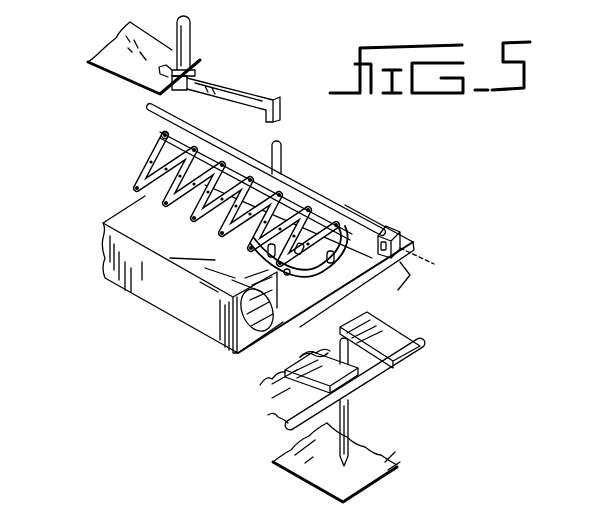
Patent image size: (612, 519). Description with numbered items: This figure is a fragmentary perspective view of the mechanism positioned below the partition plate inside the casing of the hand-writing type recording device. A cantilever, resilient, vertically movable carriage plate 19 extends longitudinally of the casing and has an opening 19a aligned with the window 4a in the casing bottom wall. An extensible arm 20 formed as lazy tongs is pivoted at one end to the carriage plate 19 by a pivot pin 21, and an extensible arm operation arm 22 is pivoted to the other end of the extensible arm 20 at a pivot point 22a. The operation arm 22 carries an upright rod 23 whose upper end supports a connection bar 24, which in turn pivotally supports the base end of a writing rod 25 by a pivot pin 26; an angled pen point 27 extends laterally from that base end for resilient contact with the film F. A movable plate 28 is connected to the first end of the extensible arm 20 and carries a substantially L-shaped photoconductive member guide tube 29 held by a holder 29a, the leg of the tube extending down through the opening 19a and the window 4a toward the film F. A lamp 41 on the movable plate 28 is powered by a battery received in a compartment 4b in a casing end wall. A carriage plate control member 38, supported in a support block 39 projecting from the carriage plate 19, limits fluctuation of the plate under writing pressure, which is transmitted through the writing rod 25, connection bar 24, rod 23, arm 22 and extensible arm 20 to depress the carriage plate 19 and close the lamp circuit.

The window 4a is at (428, 378).
The compartment 4b is at (196, 360).
The carriage plate 19 is at (434, 280).
The opening 19a is at (440, 214).
The extensible arm 20 is at (316, 168).
The pivot pin 21 is at (382, 180).
The extensible arm operation arm 22 is at (156, 127).
The pivot point 22a is at (160, 138).
The upright rod 23 is at (300, 140).
The connection bar 24 is at (280, 76).
The writing rod 25 is at (208, 27).
The pivot pin 26 is at (248, 60).
The angled pen point 27 is at (132, 70).
The movable plate 28 is at (408, 304).
The photoconductive member guide tube 29 is at (397, 400).
The holder 29a is at (442, 334).
The carriage plate control member 38 is at (380, 228).
The support block 39 is at (452, 250).
The lamp 41 is at (230, 408).
The film F is at (413, 452).